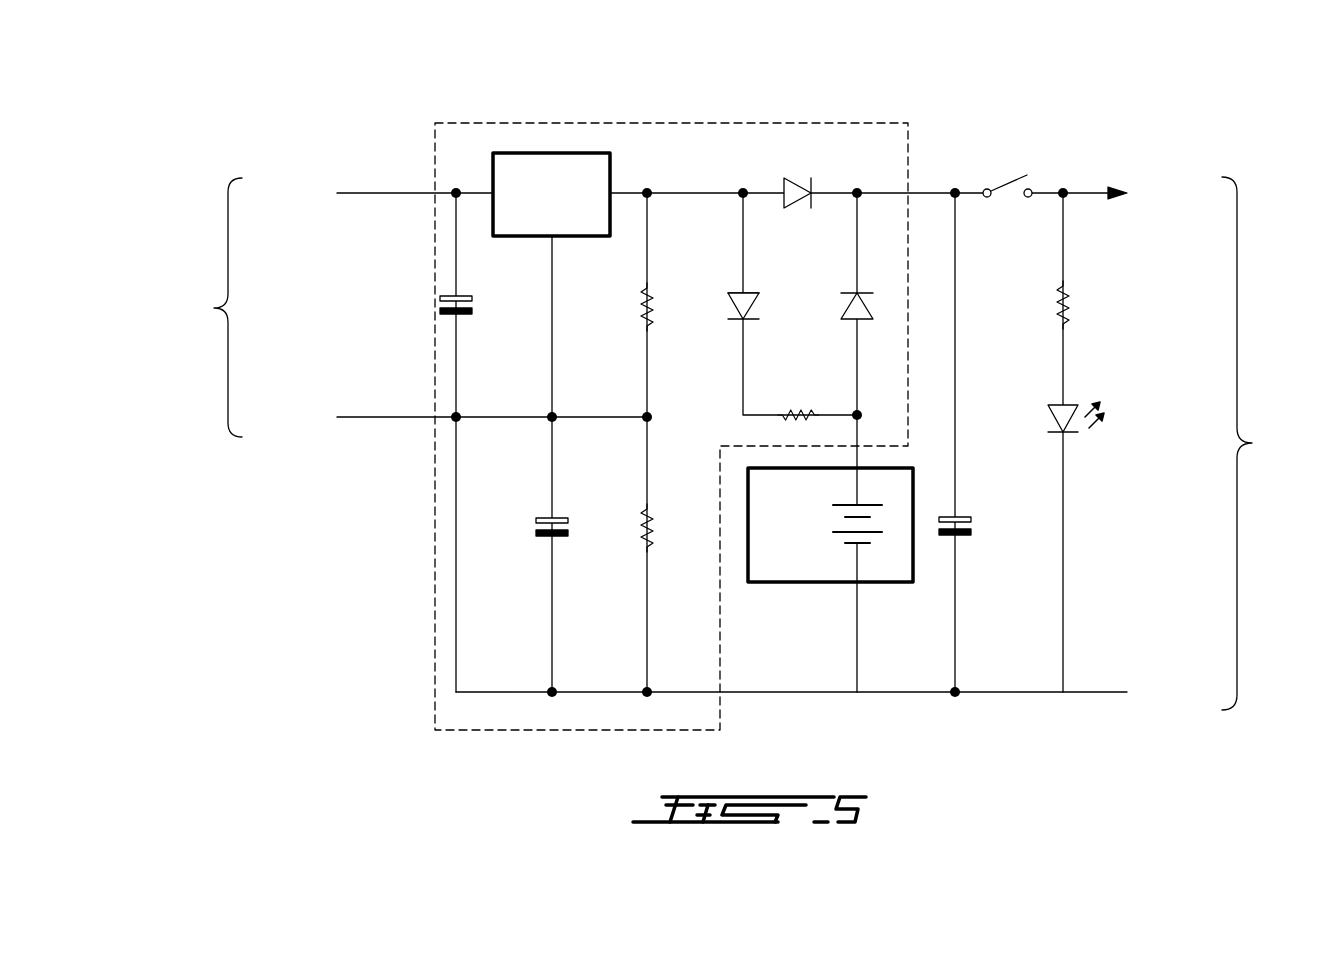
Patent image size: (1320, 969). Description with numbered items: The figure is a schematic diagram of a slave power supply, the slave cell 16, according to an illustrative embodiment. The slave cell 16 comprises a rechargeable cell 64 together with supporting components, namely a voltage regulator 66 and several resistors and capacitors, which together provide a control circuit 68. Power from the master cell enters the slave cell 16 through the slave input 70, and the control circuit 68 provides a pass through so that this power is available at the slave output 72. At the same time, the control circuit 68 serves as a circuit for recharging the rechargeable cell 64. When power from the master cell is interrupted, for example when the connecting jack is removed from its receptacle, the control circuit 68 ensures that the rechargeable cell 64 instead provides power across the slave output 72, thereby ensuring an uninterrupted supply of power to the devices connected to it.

The slave cell 16 is at (798, 100).
The rechargeable cell 64 is at (798, 582).
The voltage regulator 66 is at (553, 153).
The control circuit 68 is at (434, 628).
The slave input 70 is at (224, 307).
The slave output 72 is at (1240, 443).